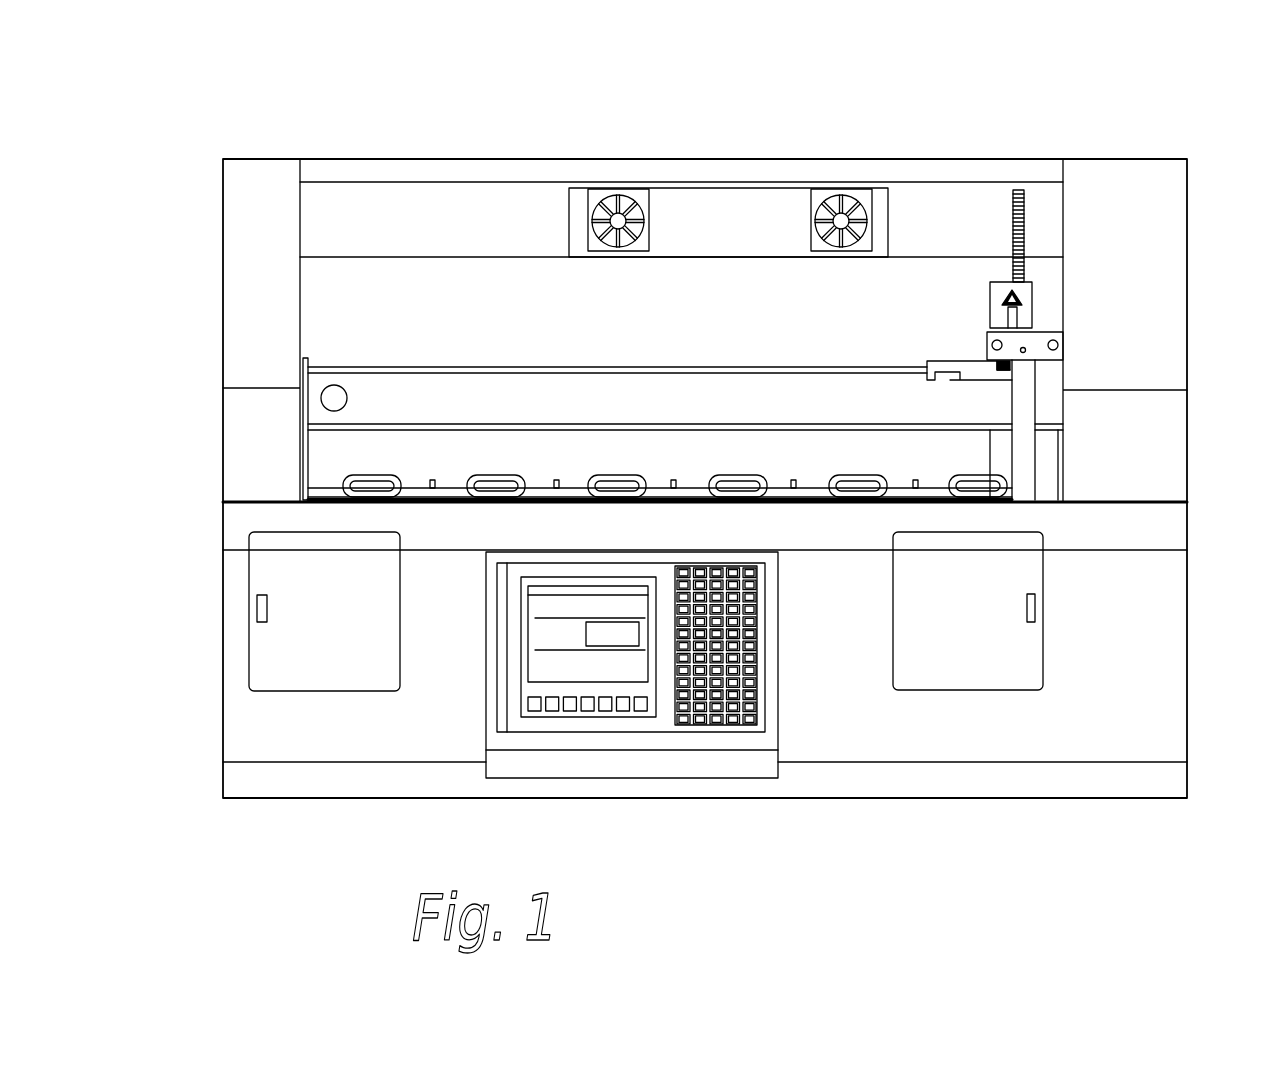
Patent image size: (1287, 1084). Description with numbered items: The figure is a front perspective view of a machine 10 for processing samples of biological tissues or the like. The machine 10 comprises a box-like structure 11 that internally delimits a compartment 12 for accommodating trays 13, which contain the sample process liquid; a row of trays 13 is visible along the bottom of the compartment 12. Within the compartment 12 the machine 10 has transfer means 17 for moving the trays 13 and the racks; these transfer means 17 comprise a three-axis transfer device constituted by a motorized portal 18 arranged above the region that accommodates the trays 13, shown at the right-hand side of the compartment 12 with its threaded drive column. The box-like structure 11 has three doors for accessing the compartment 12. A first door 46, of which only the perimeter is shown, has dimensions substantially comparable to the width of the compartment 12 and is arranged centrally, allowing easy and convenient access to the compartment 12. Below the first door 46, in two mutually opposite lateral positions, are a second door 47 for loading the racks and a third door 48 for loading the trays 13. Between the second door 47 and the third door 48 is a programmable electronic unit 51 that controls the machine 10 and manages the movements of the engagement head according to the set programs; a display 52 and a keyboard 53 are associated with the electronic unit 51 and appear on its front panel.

The machine 10 is at (705, 125).
The box-like structure 11 is at (1097, 218).
The compartment 12 is at (392, 322).
The trays 13 is at (500, 473).
The transfer means 17 is at (915, 348).
The motorized portal 18 is at (1030, 370).
The first door 46 is at (297, 327).
The second door 47 is at (993, 620).
The third door 48 is at (323, 627).
The programmable electronic unit 51 is at (707, 711).
The display 52 is at (613, 633).
The keyboard 53 is at (715, 688).